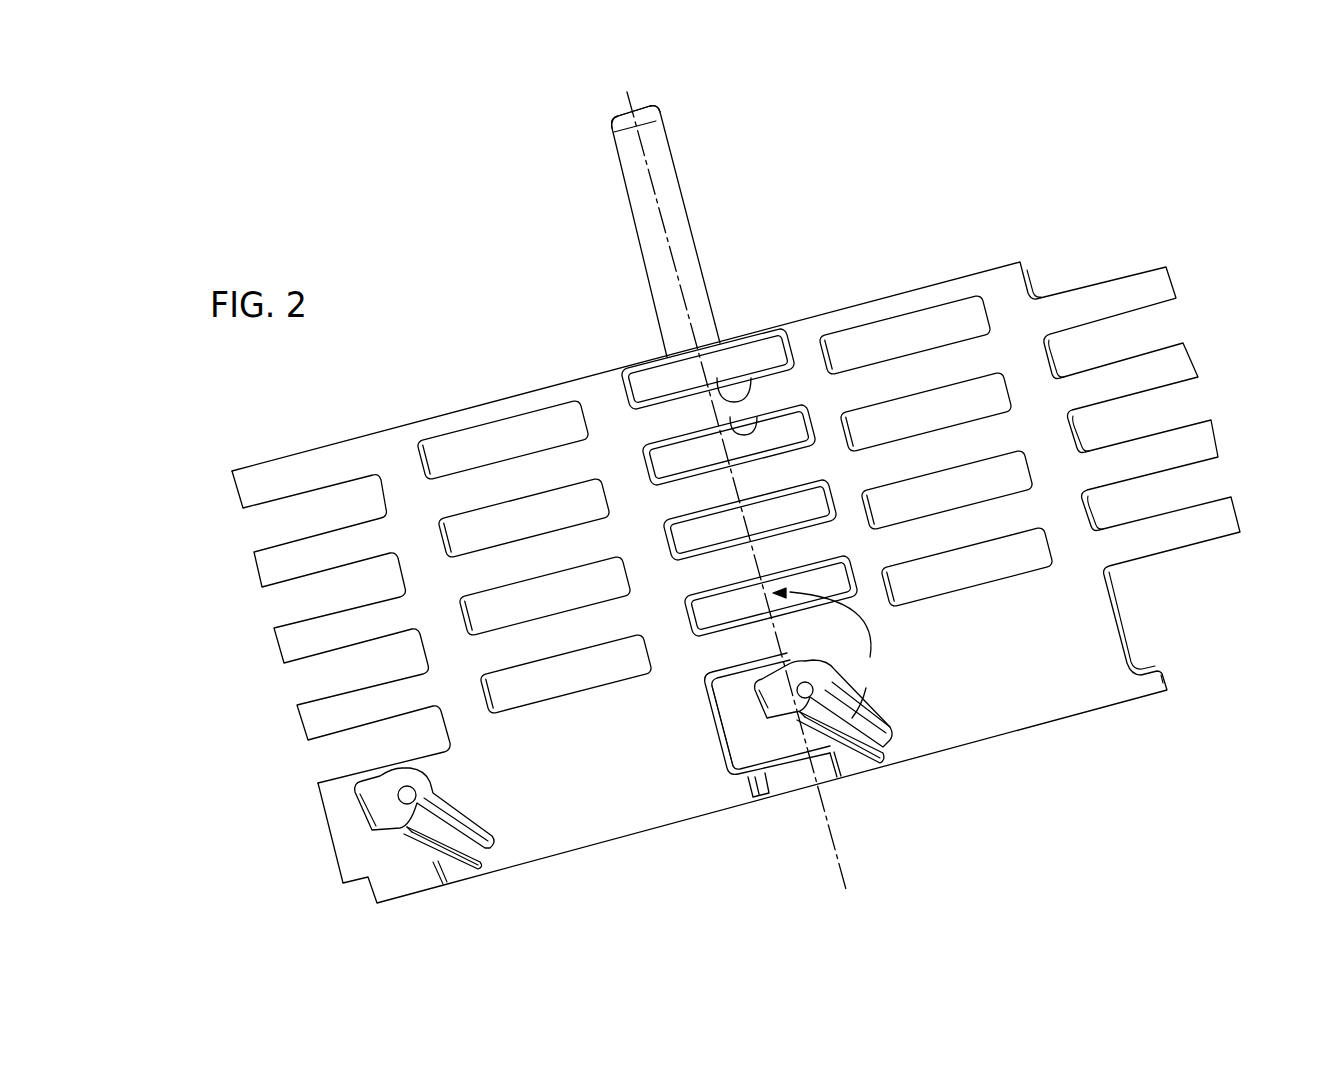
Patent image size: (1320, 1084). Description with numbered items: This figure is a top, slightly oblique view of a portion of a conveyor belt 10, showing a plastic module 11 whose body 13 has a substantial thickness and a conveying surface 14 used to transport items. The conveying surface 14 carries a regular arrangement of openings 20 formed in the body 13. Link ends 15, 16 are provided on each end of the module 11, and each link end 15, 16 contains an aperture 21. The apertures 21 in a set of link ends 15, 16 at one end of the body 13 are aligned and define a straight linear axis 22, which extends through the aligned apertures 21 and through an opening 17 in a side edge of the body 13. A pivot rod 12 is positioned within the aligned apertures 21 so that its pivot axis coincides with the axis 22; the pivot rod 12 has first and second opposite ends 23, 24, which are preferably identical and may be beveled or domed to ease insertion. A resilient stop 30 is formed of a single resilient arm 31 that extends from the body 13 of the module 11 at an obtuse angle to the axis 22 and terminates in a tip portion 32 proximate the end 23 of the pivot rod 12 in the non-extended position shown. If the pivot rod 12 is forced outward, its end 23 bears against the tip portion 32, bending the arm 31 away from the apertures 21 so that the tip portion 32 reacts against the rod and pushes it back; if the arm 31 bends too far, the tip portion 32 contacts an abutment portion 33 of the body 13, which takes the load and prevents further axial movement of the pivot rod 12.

The conveyor belt 10 is at (428, 238).
The plastic module 11 is at (917, 300).
The pivot rod 12 is at (680, 157).
The body 13 is at (862, 300).
The conveying surface 14 is at (605, 783).
The link end 15 is at (1198, 357).
The link end 16 is at (743, 360).
The opening 17 is at (428, 888).
The opening 20 is at (525, 533).
The aperture 21 is at (1120, 272).
The axis 22 is at (655, 193).
The first end 23 is at (755, 710).
The second end 24 is at (625, 100).
The resilient stop 30 is at (856, 745).
The resilient arm 31 is at (820, 790).
The tip portion 32 is at (398, 795).
The abutment portion 33 is at (400, 826).